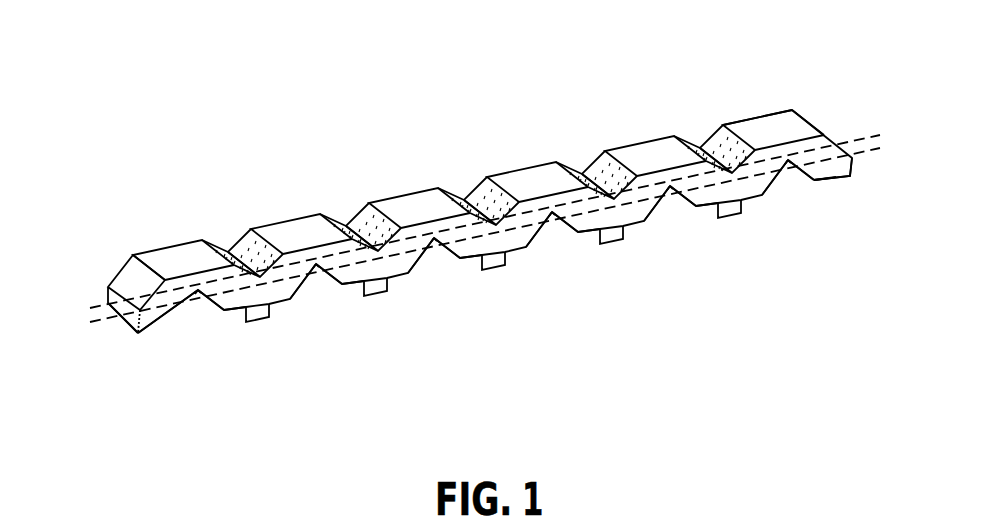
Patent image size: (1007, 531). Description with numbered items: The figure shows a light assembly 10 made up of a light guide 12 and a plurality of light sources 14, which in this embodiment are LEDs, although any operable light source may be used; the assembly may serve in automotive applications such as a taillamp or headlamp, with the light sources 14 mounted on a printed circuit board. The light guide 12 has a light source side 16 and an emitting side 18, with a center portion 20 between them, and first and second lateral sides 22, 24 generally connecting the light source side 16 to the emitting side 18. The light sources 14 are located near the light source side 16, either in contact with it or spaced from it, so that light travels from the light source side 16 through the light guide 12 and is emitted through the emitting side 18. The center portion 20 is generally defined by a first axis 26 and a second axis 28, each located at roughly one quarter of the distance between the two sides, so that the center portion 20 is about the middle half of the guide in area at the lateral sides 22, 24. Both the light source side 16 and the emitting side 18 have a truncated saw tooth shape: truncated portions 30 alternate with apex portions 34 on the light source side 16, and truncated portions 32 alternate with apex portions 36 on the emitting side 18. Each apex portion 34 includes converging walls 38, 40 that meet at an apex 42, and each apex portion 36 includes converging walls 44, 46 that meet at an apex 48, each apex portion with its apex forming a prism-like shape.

The light assembly 10 is at (819, 67).
The light guide 12 is at (826, 133).
The light sources 14 is at (506, 296).
The light source side 16 is at (158, 325).
The emitting side 18 is at (147, 258).
The center portion 20 is at (142, 331).
The first lateral side 22 is at (840, 167).
The second lateral side 24 is at (777, 108).
The first axis 26 is at (92, 322).
The second axis 28 is at (90, 307).
The truncated portions 30 is at (262, 319).
The truncated portions 32 is at (167, 253).
The apex portions 34 is at (178, 318).
The apex portions 36 is at (222, 256).
The converging wall 38 is at (198, 316).
The converging wall 40 is at (199, 293).
The apex 42 is at (203, 306).
The converging wall 44 is at (232, 256).
The converging wall 46 is at (247, 259).
The apex 48 is at (237, 259).